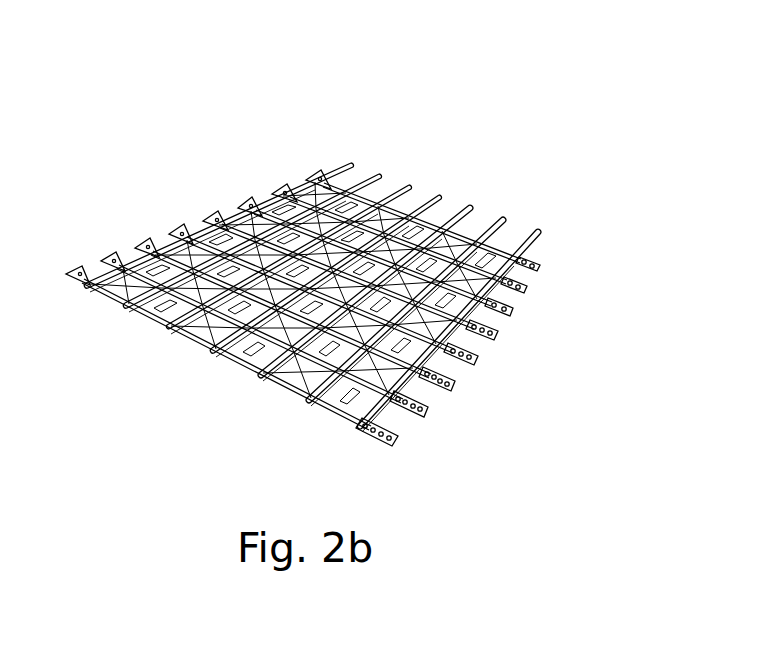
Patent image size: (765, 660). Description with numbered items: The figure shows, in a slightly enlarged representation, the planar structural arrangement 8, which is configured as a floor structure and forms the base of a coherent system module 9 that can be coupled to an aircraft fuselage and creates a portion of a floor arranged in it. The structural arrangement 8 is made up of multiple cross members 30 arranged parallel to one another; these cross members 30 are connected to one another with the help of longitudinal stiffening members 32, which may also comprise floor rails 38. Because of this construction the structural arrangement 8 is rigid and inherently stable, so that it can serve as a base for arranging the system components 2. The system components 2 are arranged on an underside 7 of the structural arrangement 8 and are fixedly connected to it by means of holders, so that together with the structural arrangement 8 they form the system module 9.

The system components 2 is at (481, 233).
The underside 7 is at (232, 389).
The structural arrangement 8 is at (200, 195).
The system module 9 is at (389, 153).
The cross members 30 is at (542, 260).
The longitudinal stiffening members 32 is at (110, 268).
The floor rails 38 is at (133, 306).